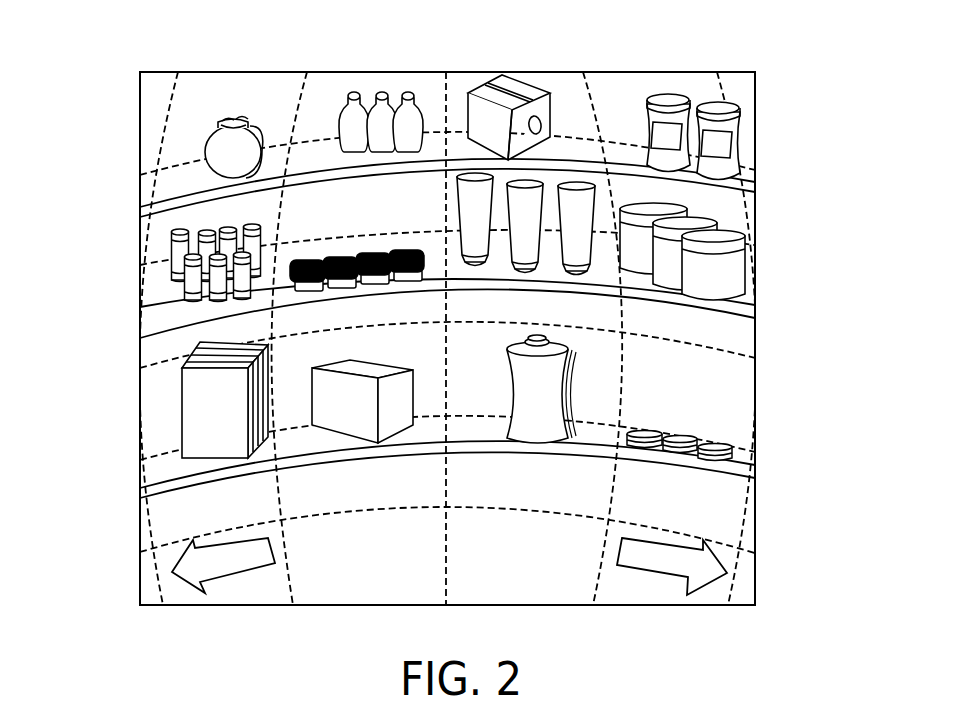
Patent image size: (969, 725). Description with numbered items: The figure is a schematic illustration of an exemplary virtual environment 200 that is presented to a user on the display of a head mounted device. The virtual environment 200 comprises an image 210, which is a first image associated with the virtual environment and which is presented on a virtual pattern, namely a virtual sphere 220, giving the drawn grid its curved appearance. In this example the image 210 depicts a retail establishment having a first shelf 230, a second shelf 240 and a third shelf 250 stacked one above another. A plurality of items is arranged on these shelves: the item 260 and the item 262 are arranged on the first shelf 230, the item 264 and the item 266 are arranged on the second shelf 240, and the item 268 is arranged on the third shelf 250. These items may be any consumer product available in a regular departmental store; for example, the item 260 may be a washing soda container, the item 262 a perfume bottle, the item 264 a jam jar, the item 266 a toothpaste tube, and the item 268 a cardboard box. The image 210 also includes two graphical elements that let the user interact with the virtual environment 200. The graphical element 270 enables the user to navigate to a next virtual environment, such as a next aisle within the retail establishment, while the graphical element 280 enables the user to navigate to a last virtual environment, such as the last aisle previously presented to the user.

The virtual environment 200 is at (744, 51).
The image 210 is at (756, 400).
The virtual sphere 220 is at (756, 350).
The first shelf 230 is at (756, 187).
The second shelf 240 is at (756, 305).
The third shelf 250 is at (756, 467).
The item 260 is at (756, 90).
The item 262 is at (350, 152).
The item 264 is at (756, 270).
The item 266 is at (335, 292).
The item 268 is at (378, 443).
The graphical element 270 is at (735, 568).
The graphical element 280 is at (195, 558).